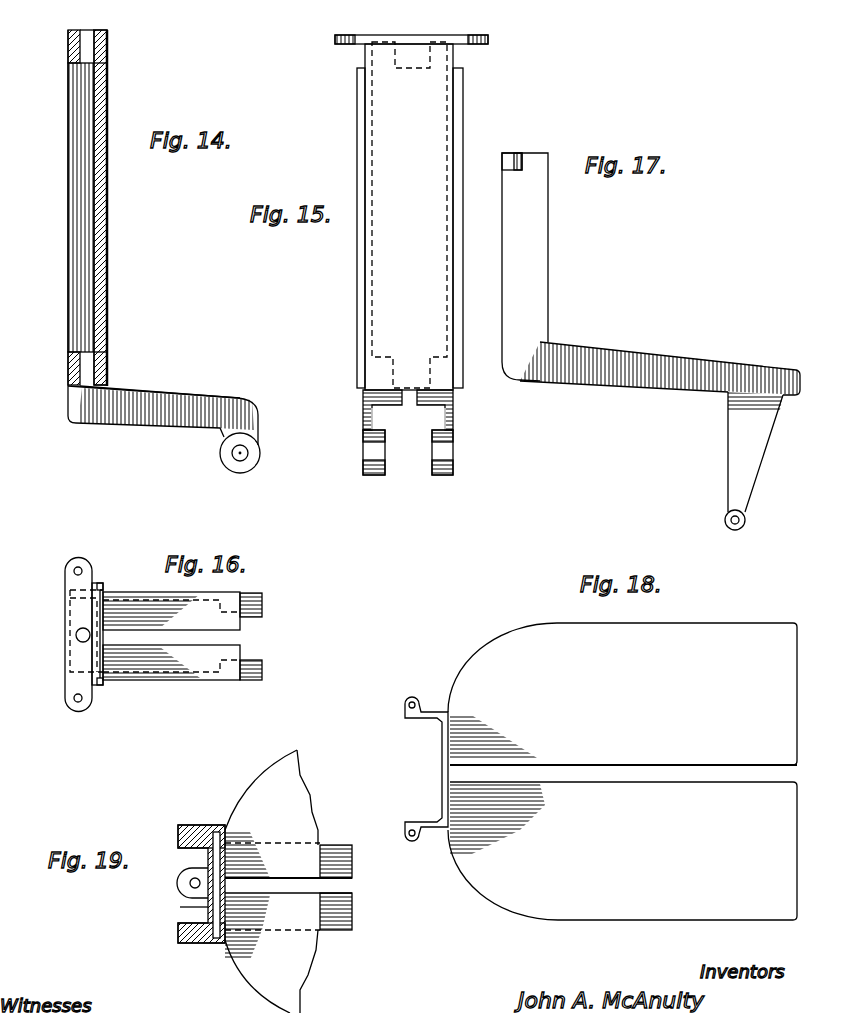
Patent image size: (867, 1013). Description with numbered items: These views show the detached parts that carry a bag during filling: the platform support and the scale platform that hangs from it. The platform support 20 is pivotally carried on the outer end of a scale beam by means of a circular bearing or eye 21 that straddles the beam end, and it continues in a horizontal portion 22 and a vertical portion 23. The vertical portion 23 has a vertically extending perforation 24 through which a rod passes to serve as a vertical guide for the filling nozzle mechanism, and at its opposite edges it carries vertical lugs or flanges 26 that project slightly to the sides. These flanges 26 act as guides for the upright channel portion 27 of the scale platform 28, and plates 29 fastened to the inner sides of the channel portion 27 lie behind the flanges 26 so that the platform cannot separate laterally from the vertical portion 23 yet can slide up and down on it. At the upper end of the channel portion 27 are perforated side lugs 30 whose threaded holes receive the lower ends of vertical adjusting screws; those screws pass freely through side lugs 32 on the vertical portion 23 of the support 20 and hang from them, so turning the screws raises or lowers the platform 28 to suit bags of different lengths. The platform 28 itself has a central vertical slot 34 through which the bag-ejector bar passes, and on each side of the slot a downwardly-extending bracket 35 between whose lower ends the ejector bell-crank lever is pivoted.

In FIG. 14, the platform support 20 is at (112, 388).
In FIG. 14, the circular bearing or eye 21 is at (232, 462).
In FIG. 15, the circular bearing or eye 21 is at (433, 470).
In FIG. 14, the horizontal portion 22 is at (168, 417).
In FIG. 15, the horizontal portion 22 is at (365, 408).
In FIG. 14, the vertical portion 23 is at (108, 216).
In FIG. 15, the vertical portion 23 is at (410, 216).
In FIG. 19, the vertical portion 23 is at (180, 907).
In FIG. 14, the vertically extending perforation 24 is at (84, 47).
In FIG. 16, the vertically extending perforation 24 is at (76, 637).
In FIG. 19, the vertically extending perforation 24 is at (190, 883).
In FIG. 16, the vertical lug or flange 26 is at (105, 587).
In FIG. 19, the vertical lug or flange 26 is at (213, 945).
In FIG. 17, the upright channel portion 27 is at (525, 267).
In FIG. 18, the upright channel portion 27 is at (448, 737).
In FIG. 19, the upright channel portion 27 is at (227, 832).
In FIG. 17, the scale platform 28 is at (642, 357).
In FIG. 18, the scale platform 28 is at (622, 771).
In FIG. 19, the scale platform 28 is at (317, 832).
In FIG. 19, the plate 29 is at (178, 838).
In FIG. 17, the perforated side lug 30 is at (513, 157).
In FIG. 18, the perforated side lug 30 is at (405, 699).
In FIG. 15, the side lug 32 is at (490, 43).
In FIG. 16, the side lug 32 is at (72, 565).
In FIG. 18, the slot 34 is at (682, 771).
In FIG. 19, the slot 34 is at (342, 888).
In FIG. 17, the downwardly-extending bracket 35 is at (735, 448).